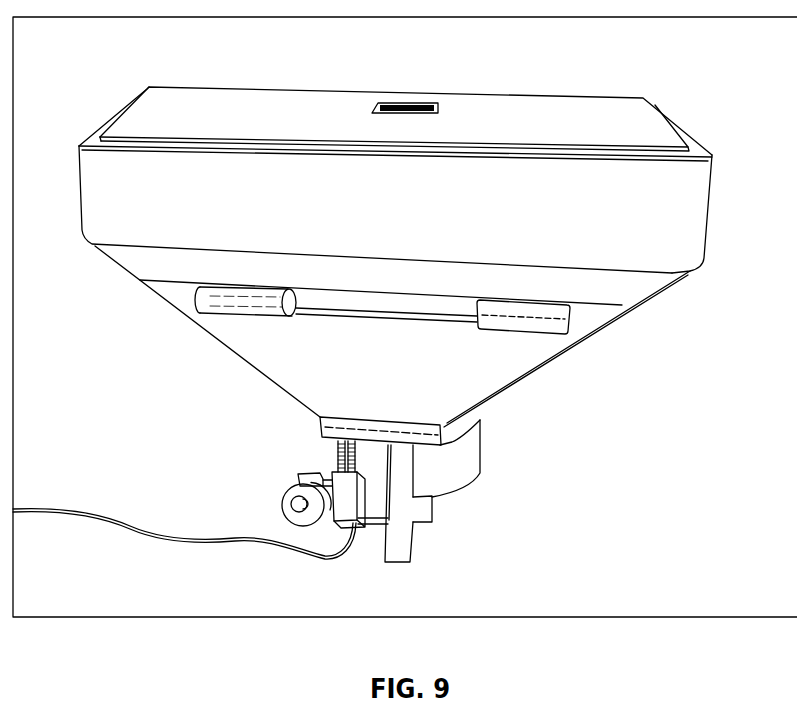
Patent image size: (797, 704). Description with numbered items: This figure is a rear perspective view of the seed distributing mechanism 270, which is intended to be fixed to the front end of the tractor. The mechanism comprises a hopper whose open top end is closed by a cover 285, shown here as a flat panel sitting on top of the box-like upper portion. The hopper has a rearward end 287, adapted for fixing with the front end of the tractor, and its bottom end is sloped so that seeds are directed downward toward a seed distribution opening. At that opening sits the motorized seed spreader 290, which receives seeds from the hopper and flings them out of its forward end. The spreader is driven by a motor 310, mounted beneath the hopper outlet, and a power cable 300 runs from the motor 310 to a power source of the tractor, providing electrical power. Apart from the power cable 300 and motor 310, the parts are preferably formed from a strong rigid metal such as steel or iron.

The seed distributing mechanism 270 is at (133, 80).
The cover 285 is at (193, 105).
The rearward end 287 is at (340, 298).
The motorized seed spreader 290 is at (492, 535).
The power cable 300 is at (262, 544).
The motor 310 is at (286, 499).